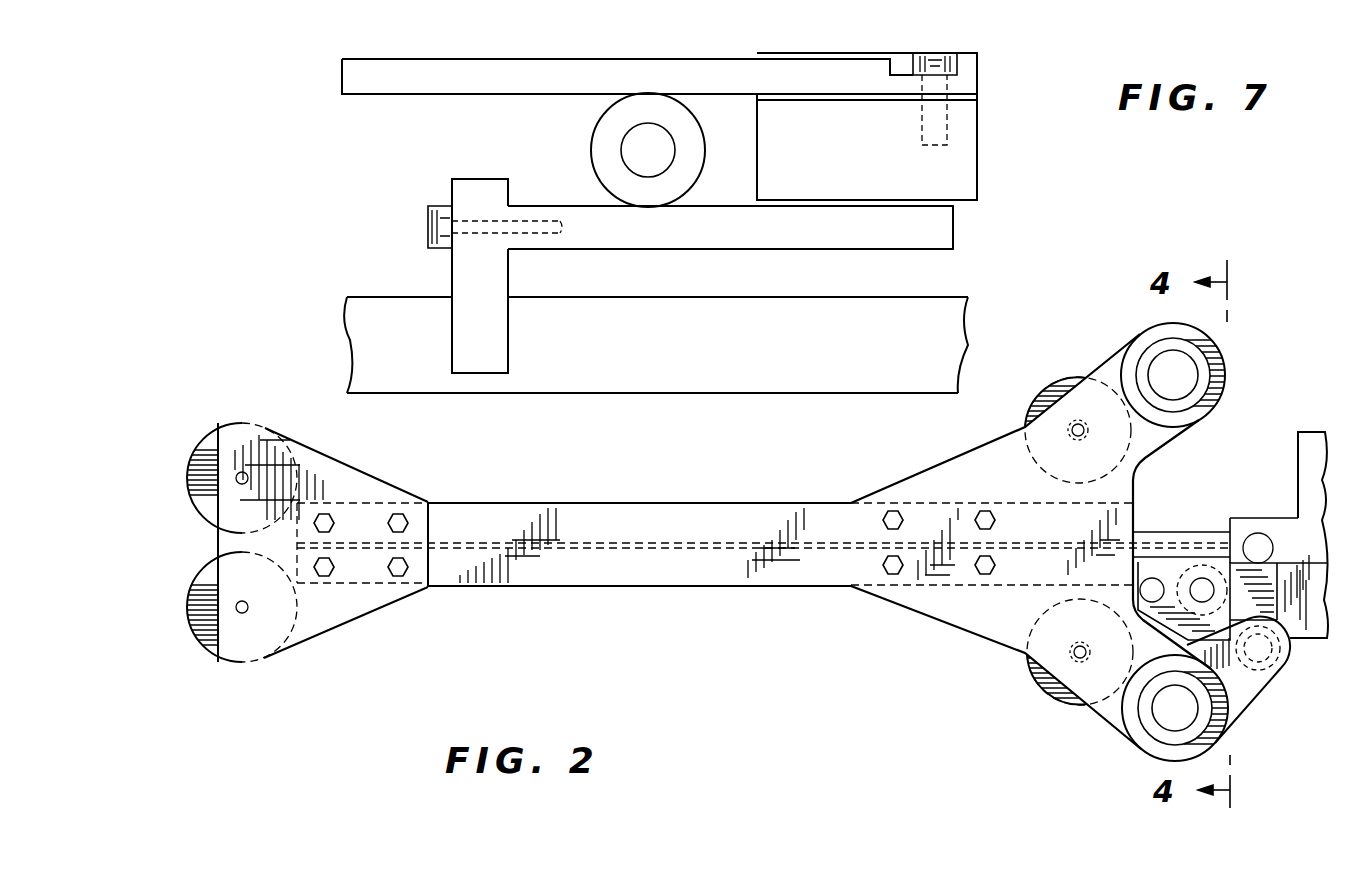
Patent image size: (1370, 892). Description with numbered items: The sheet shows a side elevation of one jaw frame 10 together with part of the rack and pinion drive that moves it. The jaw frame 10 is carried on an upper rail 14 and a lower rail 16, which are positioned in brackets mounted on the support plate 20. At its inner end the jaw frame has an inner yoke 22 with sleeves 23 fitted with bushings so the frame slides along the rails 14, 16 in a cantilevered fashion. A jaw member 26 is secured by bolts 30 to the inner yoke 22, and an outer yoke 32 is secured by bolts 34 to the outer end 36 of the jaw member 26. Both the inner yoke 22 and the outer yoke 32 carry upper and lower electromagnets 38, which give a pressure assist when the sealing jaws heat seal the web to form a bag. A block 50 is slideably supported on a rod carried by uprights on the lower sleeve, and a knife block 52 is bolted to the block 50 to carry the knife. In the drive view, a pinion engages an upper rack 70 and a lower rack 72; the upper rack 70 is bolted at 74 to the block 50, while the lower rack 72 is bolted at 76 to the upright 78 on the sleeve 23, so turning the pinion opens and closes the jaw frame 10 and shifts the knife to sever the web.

In FIG. 2, the jaw frame 10 is at (782, 640).
In FIG. 2, the upper rail 14 is at (1162, 365).
In FIG. 2, the lower rail 16 is at (1165, 712).
In FIG. 2, the support plate 20 is at (1312, 438).
In FIG. 2, the inner yoke 22 is at (978, 618).
In FIG. 7, the sleeve 23 is at (583, 380).
In FIG. 2, the jaw member 26 is at (563, 573).
In FIG. 2, the bolts 30 is at (888, 570).
In FIG. 2, the outer yoke 32 is at (317, 622).
In FIG. 2, the bolts 34 is at (400, 570).
In FIG. 2, the outer end 36 is at (392, 474).
In FIG. 2, the electromagnets 38 is at (208, 580).
In FIG. 7, the block 50 is at (965, 122).
In FIG. 2, the knife block 52 is at (1183, 530).
In FIG. 7, the upper rack 70 is at (632, 48).
In FIG. 7, the lower rack 72 is at (648, 244).
In FIG. 7, the bolt 74 is at (935, 47).
In FIG. 7, the bolt 76 is at (428, 228).
In FIG. 7, the upright 78 is at (464, 363).
In FIG. 2, the upright 78 is at (1250, 695).